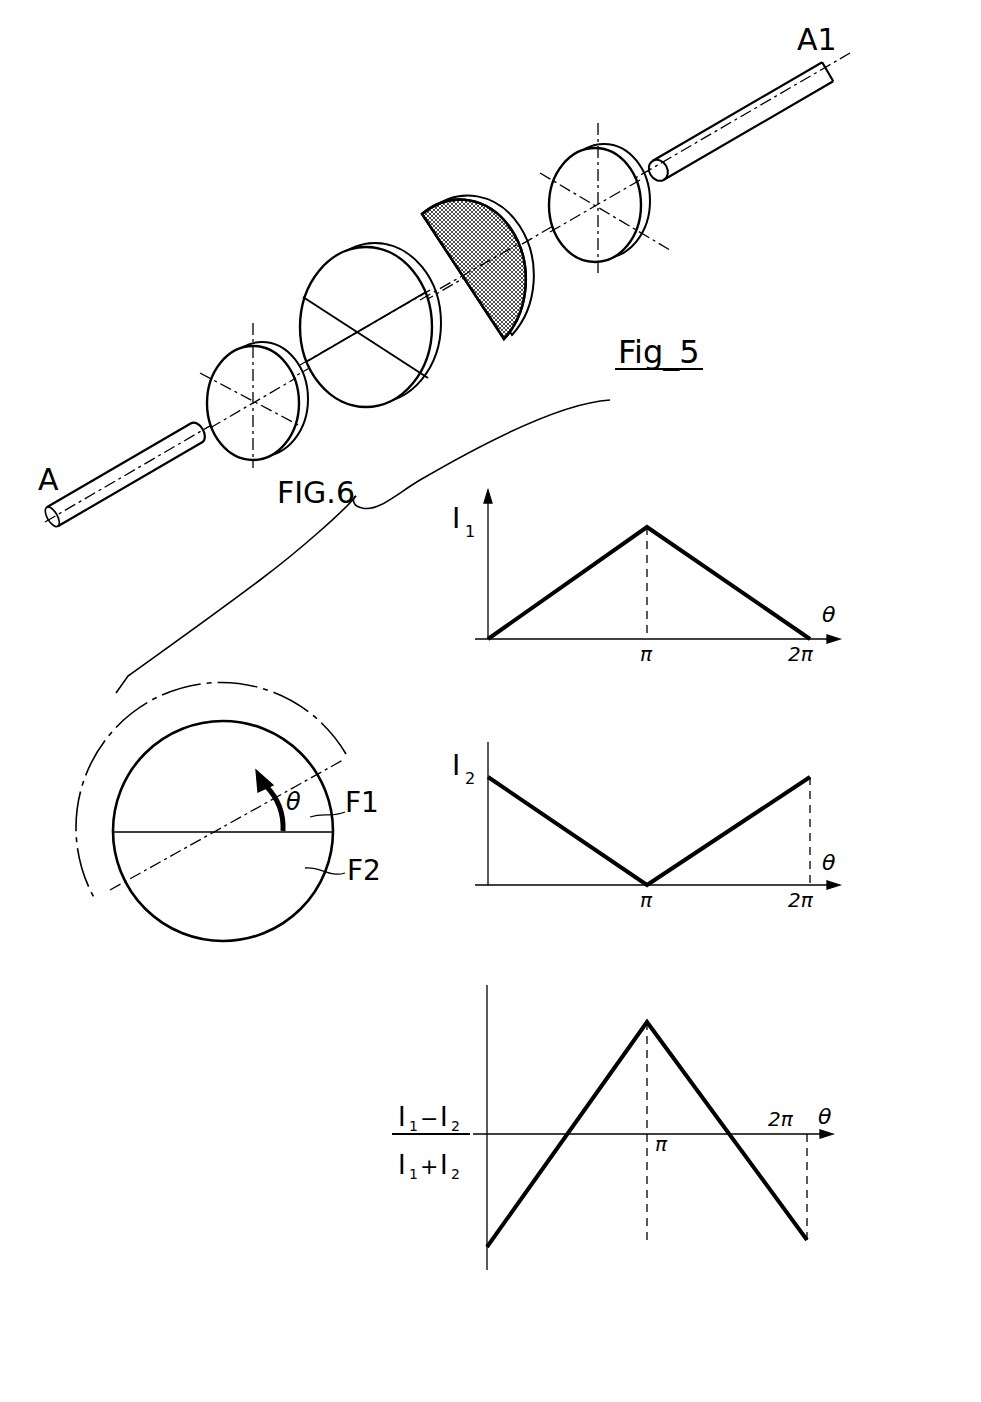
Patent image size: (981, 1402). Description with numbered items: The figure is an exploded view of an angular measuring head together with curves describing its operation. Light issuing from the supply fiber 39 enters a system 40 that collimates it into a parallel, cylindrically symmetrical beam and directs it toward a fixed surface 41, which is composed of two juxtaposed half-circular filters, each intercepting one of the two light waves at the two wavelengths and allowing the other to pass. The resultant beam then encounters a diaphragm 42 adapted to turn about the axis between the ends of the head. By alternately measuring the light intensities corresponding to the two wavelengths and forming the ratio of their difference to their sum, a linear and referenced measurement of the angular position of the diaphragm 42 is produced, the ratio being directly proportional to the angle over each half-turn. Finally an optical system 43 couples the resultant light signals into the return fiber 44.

In FIG. 5, the supply fiber 39 is at (150, 447).
In FIG. 5, the collimating system 40 is at (233, 366).
In FIG. 5, the fixed surface 41 is at (322, 285).
In FIG. 6, the fixed surface 41 is at (242, 908).
In FIG. 5, the diaphragm 42 is at (455, 224).
In FIG. 6, the diaphragm 42 is at (113, 880).
In FIG. 5, the optical system 43 is at (572, 178).
In FIG. 5, the return fiber 44 is at (725, 128).